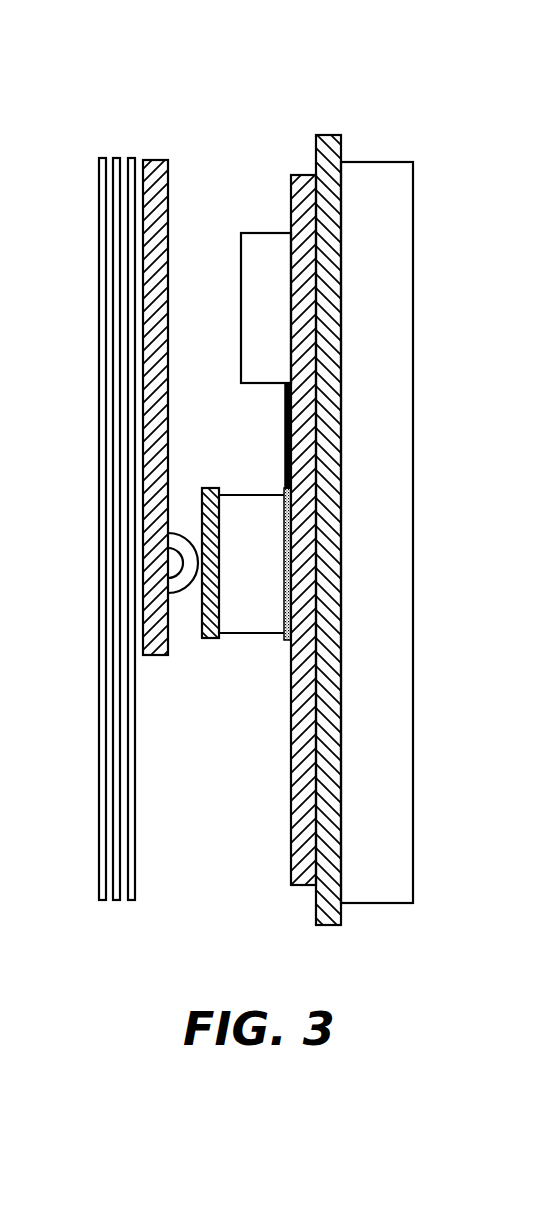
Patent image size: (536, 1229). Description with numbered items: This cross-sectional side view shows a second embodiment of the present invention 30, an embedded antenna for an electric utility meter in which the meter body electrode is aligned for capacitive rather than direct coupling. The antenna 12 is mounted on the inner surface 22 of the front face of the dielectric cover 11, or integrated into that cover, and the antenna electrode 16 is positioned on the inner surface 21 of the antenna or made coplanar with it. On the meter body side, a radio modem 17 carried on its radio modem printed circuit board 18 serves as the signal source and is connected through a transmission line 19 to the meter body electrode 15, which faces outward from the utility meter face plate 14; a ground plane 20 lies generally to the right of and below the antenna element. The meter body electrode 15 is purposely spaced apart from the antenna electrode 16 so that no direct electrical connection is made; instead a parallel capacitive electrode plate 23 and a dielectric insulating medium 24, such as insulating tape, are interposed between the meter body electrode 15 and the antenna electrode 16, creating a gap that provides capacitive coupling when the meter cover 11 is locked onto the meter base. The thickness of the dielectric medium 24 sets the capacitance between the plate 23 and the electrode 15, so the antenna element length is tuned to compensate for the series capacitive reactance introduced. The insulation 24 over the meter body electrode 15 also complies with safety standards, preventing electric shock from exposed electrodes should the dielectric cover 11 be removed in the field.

The second embodiment of the present invention 30 is at (346, 74).
The dielectric cover 11 is at (118, 308).
The antenna 12 is at (160, 160).
The inner surface of the front face of the dielectric cover 22 is at (133, 847).
The inner surface of the antenna 21 is at (169, 178).
The antenna electrode 16 is at (180, 597).
The parallel capacitive electrode plate 23 is at (211, 642).
The dielectric insulating medium 24 is at (272, 602).
The meter body electrode 15 is at (282, 531).
The transmission line 19 is at (285, 430).
The radio modem 17 is at (265, 233).
The ground plane 20 is at (291, 858).
The radio modem printed circuit board 18 is at (328, 925).
The meter face plate 14 is at (391, 192).